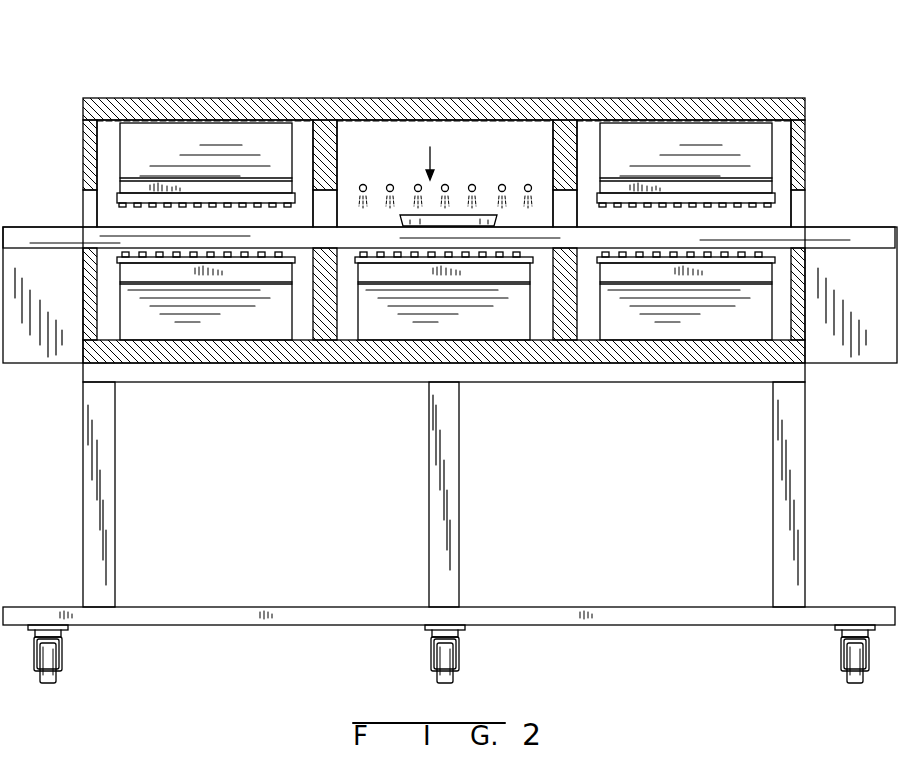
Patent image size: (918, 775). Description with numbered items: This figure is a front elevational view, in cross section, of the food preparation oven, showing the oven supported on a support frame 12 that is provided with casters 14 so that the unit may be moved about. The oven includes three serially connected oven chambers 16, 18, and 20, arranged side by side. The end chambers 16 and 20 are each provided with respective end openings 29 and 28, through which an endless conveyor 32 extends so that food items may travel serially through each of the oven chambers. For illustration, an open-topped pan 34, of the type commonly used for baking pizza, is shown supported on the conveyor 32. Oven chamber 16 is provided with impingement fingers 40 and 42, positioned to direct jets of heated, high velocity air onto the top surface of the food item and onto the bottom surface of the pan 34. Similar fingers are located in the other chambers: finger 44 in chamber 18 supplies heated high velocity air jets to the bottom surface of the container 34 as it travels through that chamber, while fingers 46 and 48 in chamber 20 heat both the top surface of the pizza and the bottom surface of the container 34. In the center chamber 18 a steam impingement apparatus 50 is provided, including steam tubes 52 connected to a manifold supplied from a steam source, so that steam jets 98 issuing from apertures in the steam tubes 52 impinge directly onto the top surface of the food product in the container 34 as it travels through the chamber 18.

The support frame 12 is at (460, 441).
The casters 14 is at (50, 683).
The oven chamber 16 is at (107, 138).
The center oven chamber 18 is at (360, 130).
The oven chamber 20 is at (589, 138).
The end opening 28 is at (805, 205).
The end opening 29 is at (85, 204).
The endless conveyor 32 is at (638, 237).
The pan 34 is at (458, 222).
The impingement finger 40 is at (235, 135).
The impingement finger 42 is at (214, 332).
The impingement finger 44 is at (413, 322).
The impingement finger 46 is at (686, 140).
The impingement finger 48 is at (688, 322).
The steam impingement apparatus 50 is at (432, 152).
The steam tubes 52 is at (527, 186).
The steam jets 98 is at (416, 195).